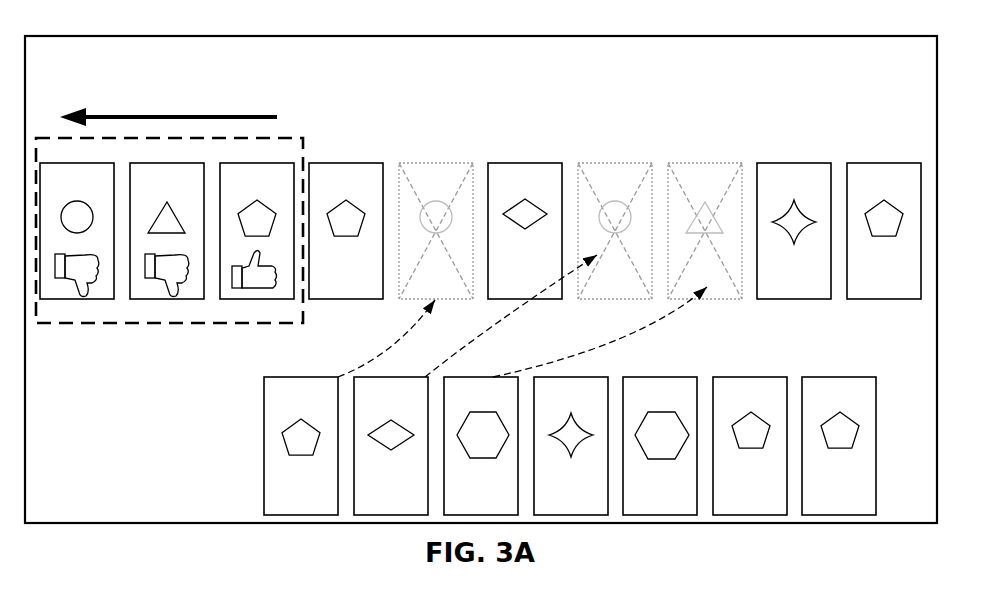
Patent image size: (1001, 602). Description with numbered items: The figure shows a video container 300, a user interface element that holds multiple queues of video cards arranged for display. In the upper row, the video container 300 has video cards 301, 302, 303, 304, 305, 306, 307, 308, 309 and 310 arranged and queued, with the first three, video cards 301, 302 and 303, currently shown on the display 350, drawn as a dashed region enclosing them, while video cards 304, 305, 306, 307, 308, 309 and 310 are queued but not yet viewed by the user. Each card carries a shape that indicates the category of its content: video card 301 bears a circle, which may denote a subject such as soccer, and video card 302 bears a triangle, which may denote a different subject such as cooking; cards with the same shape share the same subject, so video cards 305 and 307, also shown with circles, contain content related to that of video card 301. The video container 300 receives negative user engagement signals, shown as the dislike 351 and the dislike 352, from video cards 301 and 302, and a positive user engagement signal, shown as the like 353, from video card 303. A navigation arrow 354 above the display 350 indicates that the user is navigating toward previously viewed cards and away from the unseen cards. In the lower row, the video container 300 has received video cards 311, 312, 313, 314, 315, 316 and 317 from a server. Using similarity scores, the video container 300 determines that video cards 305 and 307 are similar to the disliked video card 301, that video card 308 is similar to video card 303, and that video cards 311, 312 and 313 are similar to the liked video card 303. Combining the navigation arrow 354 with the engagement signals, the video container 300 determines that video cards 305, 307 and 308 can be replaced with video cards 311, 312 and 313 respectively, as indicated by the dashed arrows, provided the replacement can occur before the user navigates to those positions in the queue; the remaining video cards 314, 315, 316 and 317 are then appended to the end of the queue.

The video container 300 is at (498, 61).
The video card 301 is at (77, 231).
The video card 302 is at (167, 231).
The video card 303 is at (257, 231).
The video card 304 is at (346, 231).
The video card 305 is at (436, 231).
The video card 306 is at (525, 231).
The video card 307 is at (615, 231).
The video card 308 is at (705, 231).
The video card 309 is at (794, 231).
The video card 310 is at (884, 231).
The video card 311 is at (349, 407).
The video card 312 is at (475, 385).
The video card 313 is at (575, 401).
The video card 314 is at (571, 446).
The video card 315 is at (660, 446).
The video card 316 is at (750, 446).
The video card 317 is at (839, 446).
The display 350 is at (292, 134).
The dislike 351 is at (76, 272).
The dislike 352 is at (166, 272).
The like 353 is at (256, 276).
The navigation arrow 354 is at (166, 110).